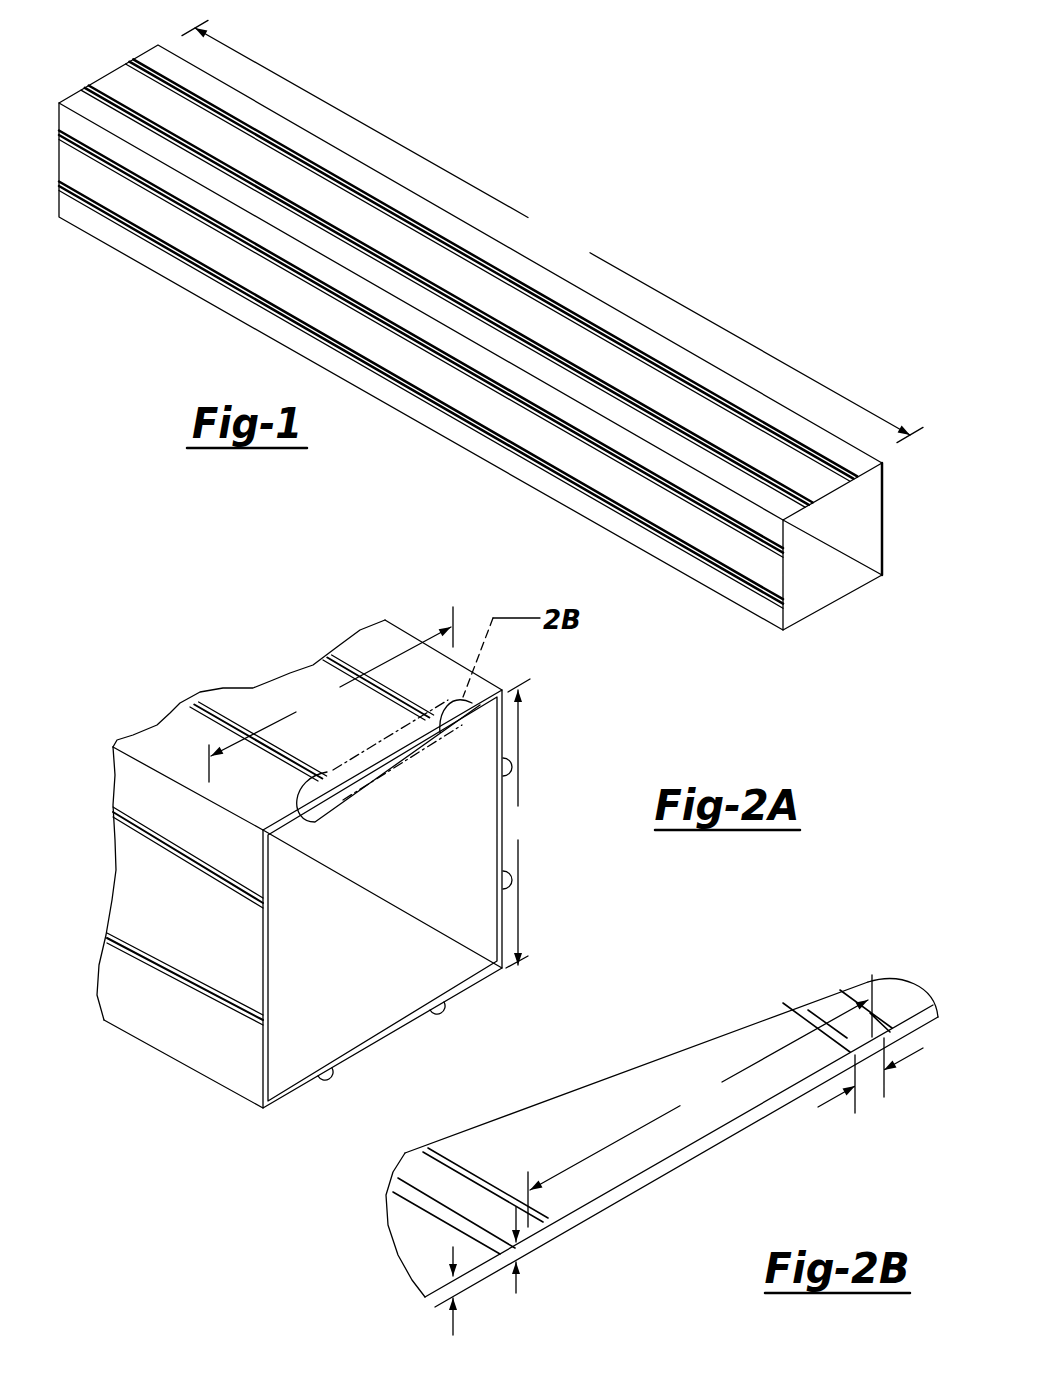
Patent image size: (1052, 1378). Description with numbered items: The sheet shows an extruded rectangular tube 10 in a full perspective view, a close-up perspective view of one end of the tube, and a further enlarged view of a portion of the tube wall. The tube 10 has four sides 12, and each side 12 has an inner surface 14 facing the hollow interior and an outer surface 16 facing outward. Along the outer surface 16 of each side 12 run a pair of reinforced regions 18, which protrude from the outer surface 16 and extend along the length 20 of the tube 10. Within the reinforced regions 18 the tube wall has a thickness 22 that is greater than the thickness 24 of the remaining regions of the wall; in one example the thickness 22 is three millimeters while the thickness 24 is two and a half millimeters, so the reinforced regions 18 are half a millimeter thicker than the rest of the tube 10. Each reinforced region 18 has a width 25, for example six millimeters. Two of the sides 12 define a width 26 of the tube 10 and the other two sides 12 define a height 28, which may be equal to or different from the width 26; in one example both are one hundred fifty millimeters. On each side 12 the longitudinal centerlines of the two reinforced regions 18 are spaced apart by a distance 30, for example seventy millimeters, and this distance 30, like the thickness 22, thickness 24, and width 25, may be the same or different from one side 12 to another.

In FIG. 1, the rectangular tube 10 is at (448, 206).
In FIG. 1, the side 12 is at (143, 100).
In FIG. 2A, the side 12 is at (242, 715).
In FIG. 2B, the side 12 is at (643, 1107).
In FIG. 1, the inner surface 14 is at (843, 539).
In FIG. 2A, the inner surface 14 is at (398, 845).
In FIG. 2B, the inner surface 14 is at (687, 1163).
In FIG. 1, the outer surface 16 is at (570, 363).
In FIG. 2A, the outer surface 16 is at (233, 807).
In FIG. 2B, the outer surface 16 is at (540, 1152).
In FIG. 1, the reinforced region 18 is at (702, 387).
In FIG. 2A, the reinforced region 18 is at (208, 720).
In FIG. 2B, the reinforced region 18 is at (815, 1008).
In FIG. 1, the length 20 is at (552, 231).
In FIG. 2B, the thickness in the reinforced regions 22 is at (517, 1268).
In FIG. 2B, the thickness in other regions 24 is at (455, 1307).
In FIG. 2B, the width of reinforced region 25 is at (856, 1087).
In FIG. 2A, the width of the tube 26 is at (331, 694).
In FIG. 2A, the height of the tube 28 is at (518, 823).
In FIG. 2B, the distance between reinforced regions 30 is at (700, 1101).